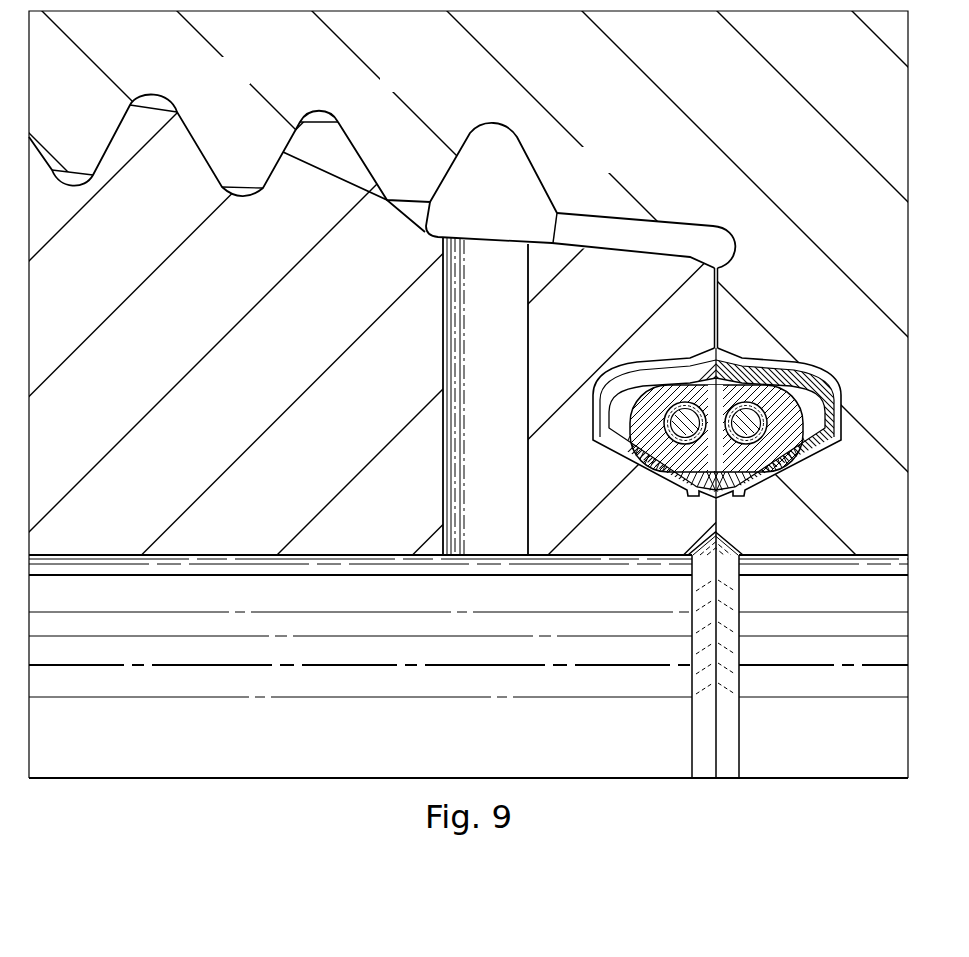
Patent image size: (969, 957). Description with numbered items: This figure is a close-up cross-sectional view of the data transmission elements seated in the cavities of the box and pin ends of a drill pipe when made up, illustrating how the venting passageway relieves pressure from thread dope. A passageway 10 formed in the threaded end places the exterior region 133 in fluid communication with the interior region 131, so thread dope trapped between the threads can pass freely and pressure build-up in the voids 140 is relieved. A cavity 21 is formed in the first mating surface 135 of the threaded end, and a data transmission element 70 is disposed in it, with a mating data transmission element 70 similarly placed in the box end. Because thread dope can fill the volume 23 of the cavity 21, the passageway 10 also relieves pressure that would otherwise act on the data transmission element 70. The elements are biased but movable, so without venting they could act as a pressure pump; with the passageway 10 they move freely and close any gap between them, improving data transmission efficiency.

The passageway 10 is at (509, 389).
The cavity 21 is at (630, 364).
The volume 23 is at (751, 350).
The data transmission element 70 is at (654, 477).
The interior region 131 is at (460, 749).
The exterior region 133 is at (510, 192).
The first mating surface 135 is at (711, 315).
The voids 140 is at (156, 102).